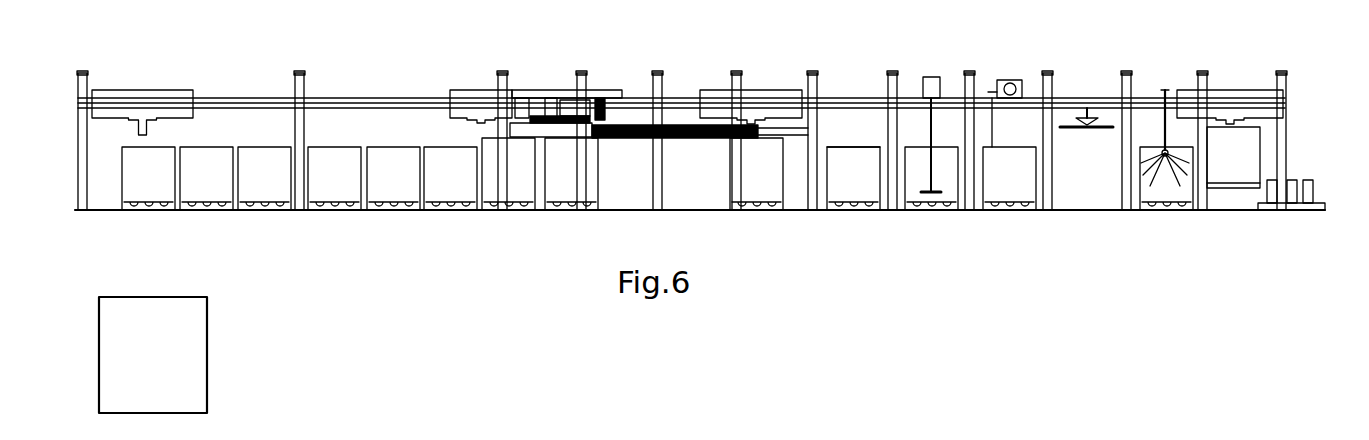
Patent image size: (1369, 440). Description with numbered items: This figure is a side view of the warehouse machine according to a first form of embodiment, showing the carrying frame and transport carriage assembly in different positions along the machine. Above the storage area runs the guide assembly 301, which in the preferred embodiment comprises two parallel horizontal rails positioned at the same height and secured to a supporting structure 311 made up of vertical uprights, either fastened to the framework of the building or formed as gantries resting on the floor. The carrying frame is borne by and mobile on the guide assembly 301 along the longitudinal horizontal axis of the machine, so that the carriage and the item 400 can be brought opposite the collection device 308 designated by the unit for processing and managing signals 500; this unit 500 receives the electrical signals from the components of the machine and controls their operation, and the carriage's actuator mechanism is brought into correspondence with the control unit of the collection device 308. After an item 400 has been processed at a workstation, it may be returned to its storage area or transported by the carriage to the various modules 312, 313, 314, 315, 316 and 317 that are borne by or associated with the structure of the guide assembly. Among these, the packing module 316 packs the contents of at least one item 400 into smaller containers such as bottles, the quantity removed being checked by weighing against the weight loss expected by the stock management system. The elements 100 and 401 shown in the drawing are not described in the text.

The loading/unloading station 100 is at (1225, 183).
The guide assembly 301 is at (233, 98).
The collection device 308 is at (659, 140).
The supporting structure 311 is at (303, 80).
The module 312 is at (1083, 110).
The module 313 is at (919, 125).
The module 314 is at (855, 138).
The module 315 is at (1000, 118).
The packing module 316 is at (1268, 165).
The module 317 is at (1150, 128).
The item 400 is at (155, 190).
The holding plate 401 is at (1083, 128).
The unit for processing and managing signals 500 is at (190, 380).